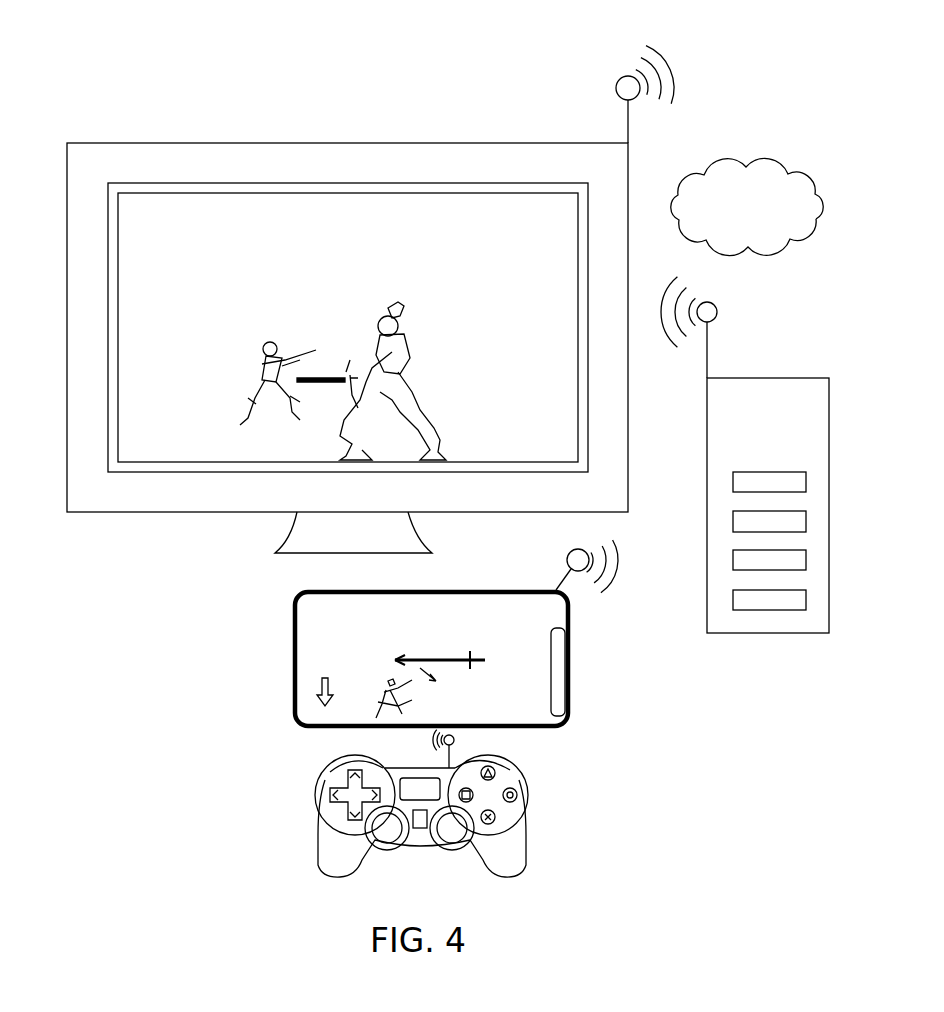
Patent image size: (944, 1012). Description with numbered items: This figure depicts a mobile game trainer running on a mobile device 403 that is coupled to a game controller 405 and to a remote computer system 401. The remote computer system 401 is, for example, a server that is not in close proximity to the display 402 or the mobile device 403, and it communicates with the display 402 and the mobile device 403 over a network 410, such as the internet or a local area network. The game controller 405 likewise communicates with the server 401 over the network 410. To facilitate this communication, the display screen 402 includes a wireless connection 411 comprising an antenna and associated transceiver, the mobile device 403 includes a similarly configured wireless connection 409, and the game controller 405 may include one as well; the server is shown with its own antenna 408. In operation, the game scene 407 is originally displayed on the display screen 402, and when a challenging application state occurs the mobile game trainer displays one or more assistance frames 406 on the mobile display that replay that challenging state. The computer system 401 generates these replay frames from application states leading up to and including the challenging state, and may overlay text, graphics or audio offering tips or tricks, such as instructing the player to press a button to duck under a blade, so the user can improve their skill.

The remote computer system 401 is at (784, 410).
The display 402 is at (612, 368).
The mobile device 403 is at (567, 700).
The game controller 405 is at (527, 788).
The assistance frames 406 is at (300, 730).
The challenging application states originally displayed 407 is at (502, 208).
The server antenna 408 is at (718, 313).
The wireless connection 409 is at (567, 580).
The network 410 is at (735, 158).
The wireless connection 411 is at (622, 77).